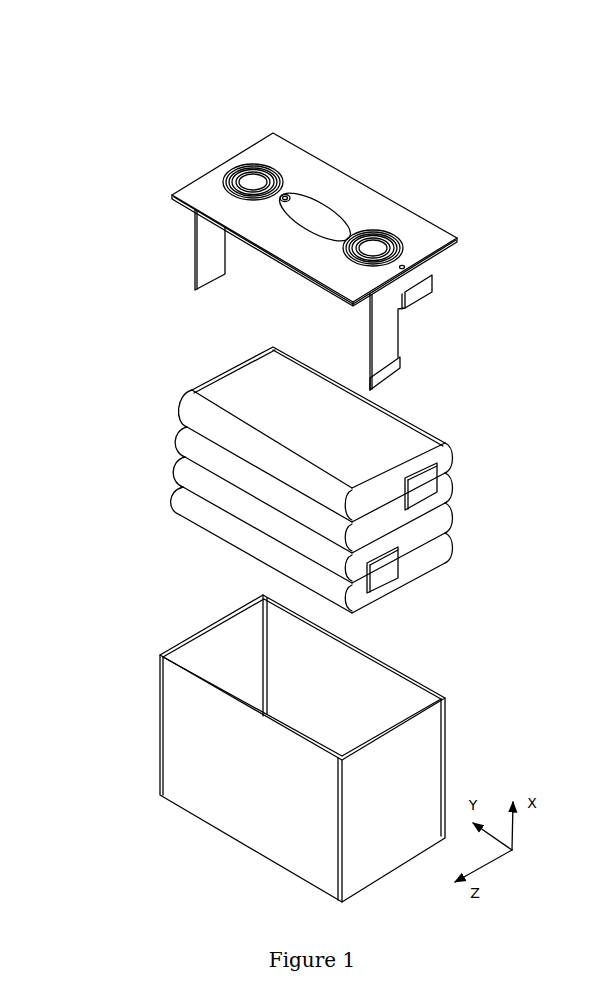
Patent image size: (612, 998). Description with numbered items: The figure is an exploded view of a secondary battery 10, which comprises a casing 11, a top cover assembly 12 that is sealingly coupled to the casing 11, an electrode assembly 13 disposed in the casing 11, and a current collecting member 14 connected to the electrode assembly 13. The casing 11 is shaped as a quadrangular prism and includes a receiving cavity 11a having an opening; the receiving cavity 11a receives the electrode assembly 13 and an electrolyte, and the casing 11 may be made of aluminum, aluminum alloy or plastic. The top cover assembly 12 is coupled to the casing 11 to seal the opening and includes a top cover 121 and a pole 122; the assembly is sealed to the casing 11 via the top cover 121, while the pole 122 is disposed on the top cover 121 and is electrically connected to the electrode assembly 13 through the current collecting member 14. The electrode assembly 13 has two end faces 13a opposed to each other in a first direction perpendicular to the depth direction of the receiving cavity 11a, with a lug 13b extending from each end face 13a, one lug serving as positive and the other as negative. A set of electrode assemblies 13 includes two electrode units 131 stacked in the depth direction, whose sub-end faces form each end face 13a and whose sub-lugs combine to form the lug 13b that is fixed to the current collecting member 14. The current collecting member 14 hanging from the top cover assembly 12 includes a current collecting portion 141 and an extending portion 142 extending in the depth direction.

The secondary battery 10 is at (342, 46).
The casing 11 is at (268, 805).
The receiving cavity 11a is at (400, 696).
The top cover assembly 12 is at (316, 141).
The top cover 121 is at (337, 184).
The pole 122 is at (253, 178).
The electrode assembly 13 is at (165, 433).
The end face 13a is at (208, 381).
The lug 13b is at (423, 478).
The electrode unit 131 is at (293, 468).
The current collecting member 14 is at (210, 250).
The current collecting portion 141 is at (433, 297).
The extending portion 142 is at (387, 337).